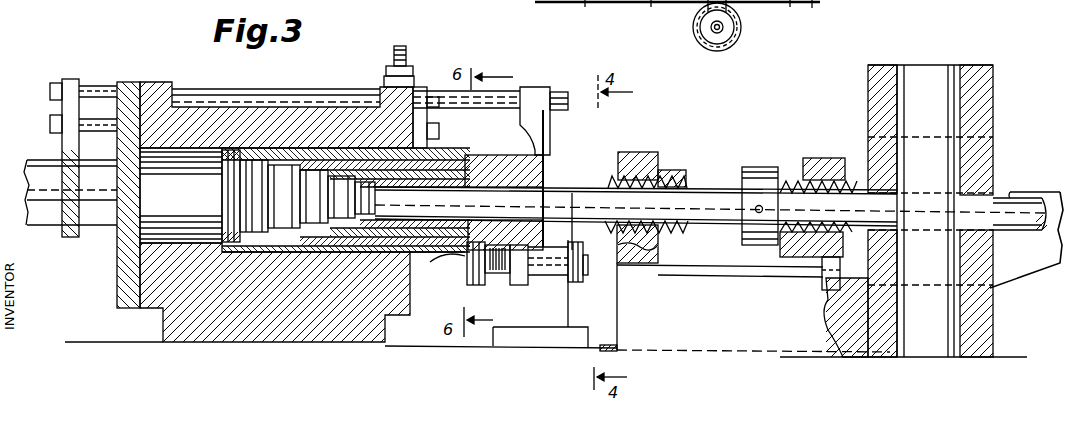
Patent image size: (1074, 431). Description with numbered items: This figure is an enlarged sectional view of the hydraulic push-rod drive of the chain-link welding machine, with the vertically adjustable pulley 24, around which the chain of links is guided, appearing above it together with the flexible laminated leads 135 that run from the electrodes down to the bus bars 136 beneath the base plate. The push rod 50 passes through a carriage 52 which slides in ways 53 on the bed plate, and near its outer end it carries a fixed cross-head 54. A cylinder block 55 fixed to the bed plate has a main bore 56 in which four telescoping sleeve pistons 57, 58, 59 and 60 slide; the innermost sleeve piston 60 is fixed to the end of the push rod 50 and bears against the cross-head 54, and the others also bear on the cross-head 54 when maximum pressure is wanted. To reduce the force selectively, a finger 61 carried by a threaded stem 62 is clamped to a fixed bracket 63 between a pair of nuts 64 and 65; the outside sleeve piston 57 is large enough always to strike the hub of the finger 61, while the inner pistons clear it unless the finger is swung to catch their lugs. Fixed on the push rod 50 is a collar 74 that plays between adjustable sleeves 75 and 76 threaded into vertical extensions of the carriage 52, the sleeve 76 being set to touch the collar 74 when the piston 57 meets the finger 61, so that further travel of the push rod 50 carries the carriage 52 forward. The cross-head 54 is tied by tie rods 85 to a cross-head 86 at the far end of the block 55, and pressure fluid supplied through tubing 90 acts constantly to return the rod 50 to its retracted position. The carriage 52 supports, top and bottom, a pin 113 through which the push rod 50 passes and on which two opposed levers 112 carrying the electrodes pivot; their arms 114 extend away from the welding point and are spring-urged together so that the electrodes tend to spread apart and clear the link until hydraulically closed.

The vertically adjustable pulley 24 is at (703, 48).
The flexible laminated leads 135 is at (658, 6).
The bus bars 136 is at (620, 4).
The push rod 50 is at (708, 188).
The carriage 52 is at (868, 90).
The ways 53 is at (607, 350).
The cross-head 54 is at (565, 155).
The cylinder block 55 is at (152, 271).
The main bore 56 is at (181, 195).
The outside sleeve piston 57 is at (439, 150).
The sleeve piston 58 is at (447, 156).
The sleeve piston 59 is at (460, 162).
The innermost sleeve piston 60 is at (437, 269).
The finger 61 is at (467, 285).
The threaded stem 62 is at (490, 275).
The fixed bracket 63 is at (556, 323).
The nut 64 is at (505, 290).
The nut 65 is at (571, 283).
The collar 74 is at (762, 167).
The adjustable sleeve 75 is at (678, 168).
The adjustable sleeve 76 is at (800, 159).
The tie rods 85 is at (308, 88).
The cross-head 86 is at (70, 238).
The tubing 90 is at (407, 53).
The levers 112 is at (995, 158).
The pin 113 is at (928, 72).
The arms 114 is at (32, 166).